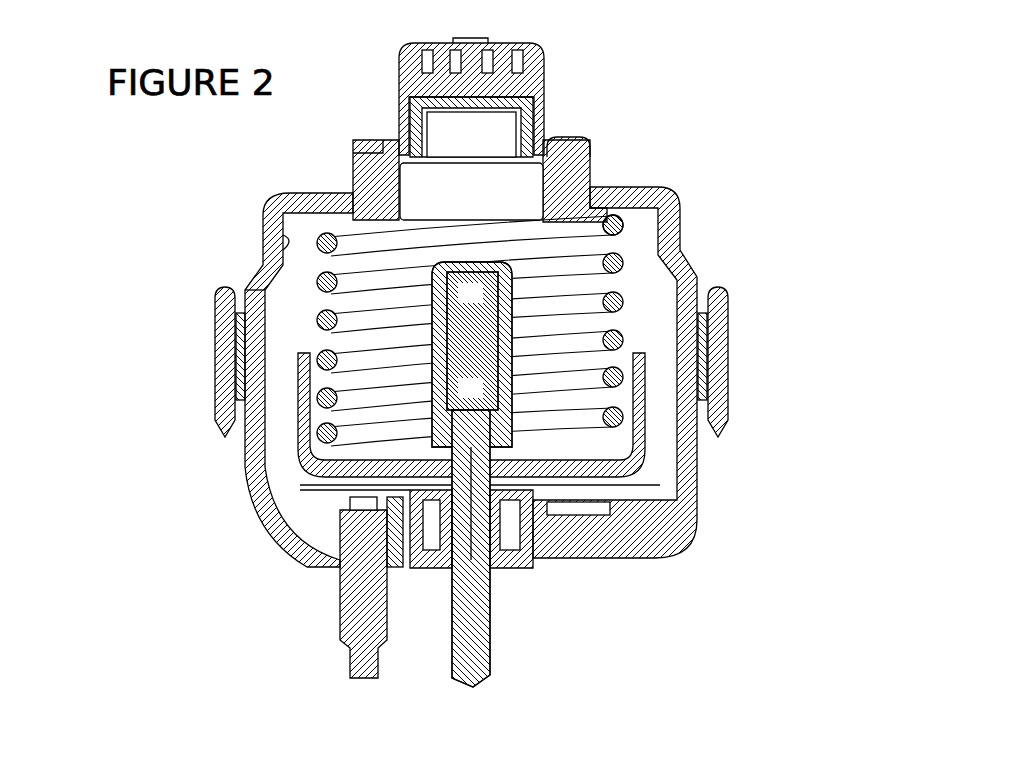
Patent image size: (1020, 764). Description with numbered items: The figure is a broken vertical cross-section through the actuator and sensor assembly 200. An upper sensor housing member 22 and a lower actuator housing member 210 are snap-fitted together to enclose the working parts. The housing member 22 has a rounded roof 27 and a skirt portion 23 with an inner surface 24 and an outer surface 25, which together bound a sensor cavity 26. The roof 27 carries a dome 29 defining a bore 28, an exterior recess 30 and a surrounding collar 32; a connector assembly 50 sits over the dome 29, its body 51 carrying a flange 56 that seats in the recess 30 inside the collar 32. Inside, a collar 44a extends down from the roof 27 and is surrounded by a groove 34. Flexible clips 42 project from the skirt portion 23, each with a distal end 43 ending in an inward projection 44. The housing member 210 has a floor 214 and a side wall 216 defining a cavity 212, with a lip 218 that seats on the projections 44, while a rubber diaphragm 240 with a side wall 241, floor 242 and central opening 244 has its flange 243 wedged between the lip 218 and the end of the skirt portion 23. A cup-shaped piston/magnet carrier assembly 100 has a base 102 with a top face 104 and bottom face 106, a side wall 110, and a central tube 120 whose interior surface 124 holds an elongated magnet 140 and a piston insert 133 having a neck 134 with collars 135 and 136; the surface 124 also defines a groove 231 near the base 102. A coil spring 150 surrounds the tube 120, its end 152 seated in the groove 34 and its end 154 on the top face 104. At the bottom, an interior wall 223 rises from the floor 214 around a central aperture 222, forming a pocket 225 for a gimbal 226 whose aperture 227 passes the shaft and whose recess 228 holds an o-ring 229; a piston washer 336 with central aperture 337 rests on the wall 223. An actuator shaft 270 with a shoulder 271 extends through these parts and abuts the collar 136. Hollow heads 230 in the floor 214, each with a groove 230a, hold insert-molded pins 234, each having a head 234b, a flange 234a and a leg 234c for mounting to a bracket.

The actuator and sensor assembly 200 is at (787, 162).
The connector assembly 50 is at (428, 40).
The body 51 is at (420, 80).
The interior bore or cavity 28 is at (540, 58).
The dome 29 is at (500, 127).
The exterior circumferential recess 30 is at (383, 153).
The collar 32 is at (565, 170).
The circumferential recess or groove 34 is at (340, 217).
The annular distal circumferential flange 56 is at (562, 145).
The magnet 140 is at (503, 268).
The spring 150 is at (675, 191).
The spring end 152 is at (622, 215).
The sensor housing or cover member 22 is at (685, 208).
The interior sensor cavity or chamber 26 is at (620, 277).
The hollow tube or receptacle 120 is at (548, 308).
The piston/magnet carrier assembly 100 is at (647, 345).
The interior cylindrical surface 124 is at (622, 308).
The spring end 154 is at (327, 327).
The roof 27 is at (313, 212).
The outer surface 25 is at (267, 223).
The skirt portion 23 is at (255, 270).
The inner surface 24 is at (270, 205).
The clips 42 is at (227, 318).
The flange 243 is at (230, 363).
The flange 218 is at (248, 392).
The distal end 43 is at (233, 413).
The projection 44 is at (223, 425).
The collar 44a is at (407, 235).
The diaphragm 240 is at (657, 418).
The side wall 241 is at (705, 440).
The side wall 216 is at (697, 453).
The interior cavity or chamber 212 is at (687, 490).
The top face 104 is at (657, 483).
The base 102 is at (663, 485).
The piston washer 336 is at (680, 500).
The piston insert 133 is at (673, 530).
The shoulder or recess 271 is at (660, 527).
The first interior circumferentially extending wall 223 is at (645, 560).
The floor 214 is at (633, 560).
The circumferential recess 228 is at (577, 553).
The side wall 110 is at (250, 455).
The collar 136 is at (287, 463).
The neck 134 is at (273, 473).
The collar 135 is at (340, 487).
The bottom face 106 is at (347, 528).
The central aperture 337 is at (499, 668).
The actuator shaft 270 is at (492, 665).
The actuator housing member 210 is at (267, 550).
The peripheral heads 230 is at (300, 535).
The floor 242 is at (270, 550).
The pins 234 is at (342, 663).
The ring or flange 234a is at (390, 560).
The head 234b is at (333, 550).
The leg 234c is at (347, 647).
The ring-shaped groove 230a is at (337, 570).
The bore wall 231 is at (403, 560).
The pocket 225 is at (430, 553).
The central through aperture 227 is at (463, 547).
The o-ring 229 is at (507, 547).
The gimbal 226 is at (493, 547).
The central through aperture 222 is at (490, 550).
The central opening 244 is at (490, 553).